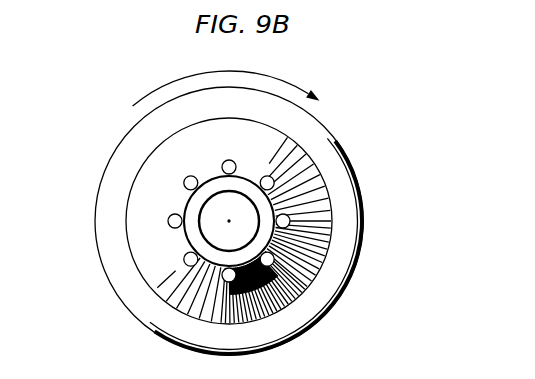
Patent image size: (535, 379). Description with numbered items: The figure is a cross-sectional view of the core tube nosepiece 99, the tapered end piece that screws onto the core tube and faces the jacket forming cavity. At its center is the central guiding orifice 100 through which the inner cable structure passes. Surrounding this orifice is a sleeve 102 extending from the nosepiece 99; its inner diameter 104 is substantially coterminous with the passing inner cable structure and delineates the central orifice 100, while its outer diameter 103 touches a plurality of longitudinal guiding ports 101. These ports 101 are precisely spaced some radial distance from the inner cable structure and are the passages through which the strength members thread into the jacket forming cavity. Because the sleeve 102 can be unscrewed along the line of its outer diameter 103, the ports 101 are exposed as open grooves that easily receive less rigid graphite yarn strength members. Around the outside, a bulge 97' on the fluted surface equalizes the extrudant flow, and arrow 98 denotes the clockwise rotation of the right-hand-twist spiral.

The arrow 98 is at (320, 96).
The central guiding orifice 100 is at (213, 210).
The sleeve 102 is at (185, 212).
The inner diameter 104 is at (195, 233).
The outer diameter 103 is at (140, 273).
The longitudinal guiding ports 101 is at (232, 162).
The nosepiece 99 is at (325, 243).
The bulge 97' is at (251, 221).